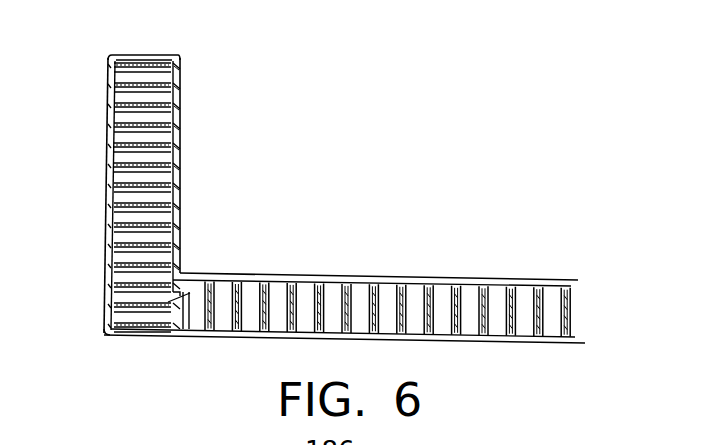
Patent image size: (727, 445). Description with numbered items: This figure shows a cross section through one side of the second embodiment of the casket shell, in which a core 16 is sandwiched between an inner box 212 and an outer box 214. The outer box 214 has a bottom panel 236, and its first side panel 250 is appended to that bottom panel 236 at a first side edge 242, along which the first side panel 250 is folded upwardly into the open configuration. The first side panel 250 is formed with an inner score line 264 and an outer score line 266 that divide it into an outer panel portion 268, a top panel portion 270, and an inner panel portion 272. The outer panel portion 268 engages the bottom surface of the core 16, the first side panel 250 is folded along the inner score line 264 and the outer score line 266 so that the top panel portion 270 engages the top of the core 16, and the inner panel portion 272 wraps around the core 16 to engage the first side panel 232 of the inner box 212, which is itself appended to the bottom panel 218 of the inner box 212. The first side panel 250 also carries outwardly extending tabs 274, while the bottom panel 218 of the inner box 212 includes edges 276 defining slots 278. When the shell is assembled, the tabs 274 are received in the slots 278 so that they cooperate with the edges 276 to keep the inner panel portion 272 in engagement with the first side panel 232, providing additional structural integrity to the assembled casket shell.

The core 16 is at (591, 313).
The inner box 212 is at (175, 120).
The outer box 214 is at (175, 139).
The bottom panel 218 is at (460, 280).
The first side panel 232 is at (173, 169).
The bottom panel 236 is at (441, 343).
The first side edge 242 is at (105, 335).
The first side panel 250 is at (108, 131).
The inner score line 264 is at (112, 57).
The outer score line 266 is at (180, 55).
The outer panel portion 268 is at (108, 198).
The top panel portion 270 is at (141, 55).
The inner panel portion 272 is at (177, 190).
The tabs 274 is at (172, 334).
The edges 276 is at (177, 253).
The slots 278 is at (193, 334).